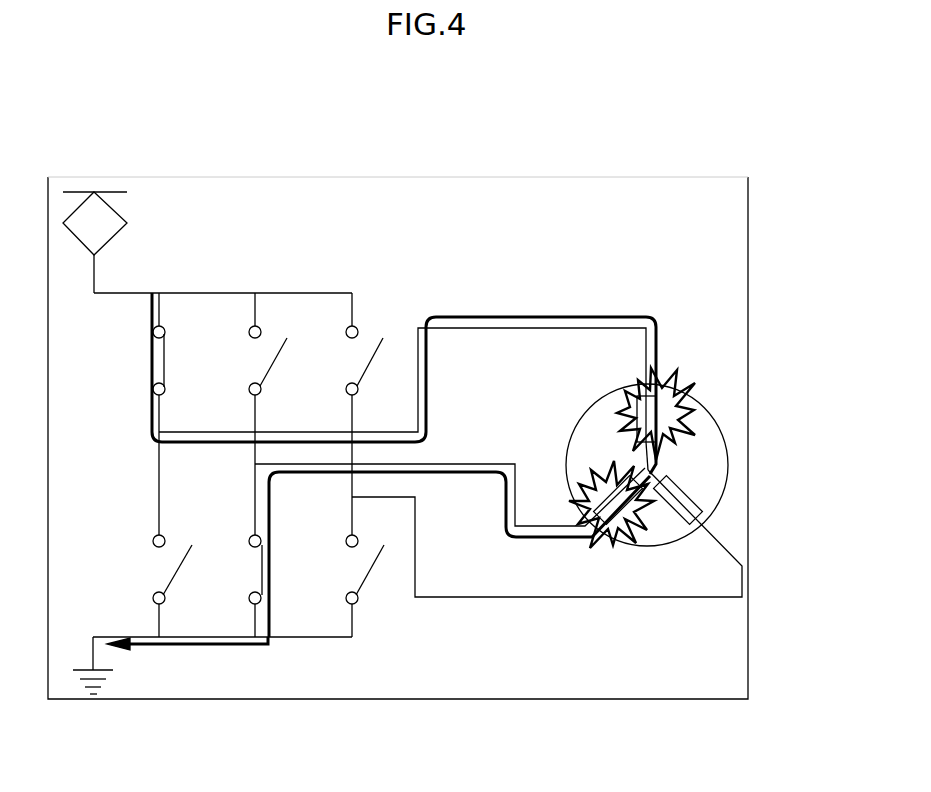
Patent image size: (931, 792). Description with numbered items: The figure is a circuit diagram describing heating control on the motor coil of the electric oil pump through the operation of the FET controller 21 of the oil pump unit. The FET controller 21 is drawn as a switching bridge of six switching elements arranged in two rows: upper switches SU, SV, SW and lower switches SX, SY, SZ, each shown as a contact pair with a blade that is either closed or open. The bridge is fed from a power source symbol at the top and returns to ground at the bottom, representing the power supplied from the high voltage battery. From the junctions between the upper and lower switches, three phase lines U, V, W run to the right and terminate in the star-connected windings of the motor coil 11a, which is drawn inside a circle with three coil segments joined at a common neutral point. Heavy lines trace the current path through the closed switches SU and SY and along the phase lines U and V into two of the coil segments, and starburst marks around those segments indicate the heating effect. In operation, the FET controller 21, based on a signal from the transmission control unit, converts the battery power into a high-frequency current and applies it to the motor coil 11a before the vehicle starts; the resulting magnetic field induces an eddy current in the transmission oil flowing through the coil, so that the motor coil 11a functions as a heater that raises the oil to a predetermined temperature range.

The FET controller 21 is at (205, 293).
The motor coil 11a is at (713, 472).
The switching element SU is at (139, 344).
The switching element SV is at (249, 344).
The switching element SW is at (344, 344).
The switching element SX is at (153, 586).
The switching element SY is at (237, 586).
The switching element SZ is at (344, 586).
The U-phase line U is at (404, 367).
The V-phase line V is at (452, 536).
The W-phase line W is at (547, 533).